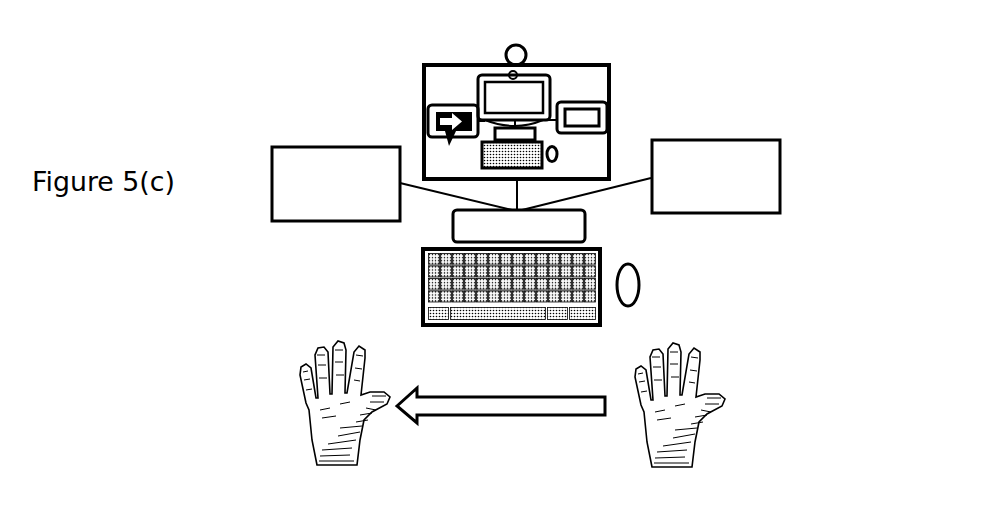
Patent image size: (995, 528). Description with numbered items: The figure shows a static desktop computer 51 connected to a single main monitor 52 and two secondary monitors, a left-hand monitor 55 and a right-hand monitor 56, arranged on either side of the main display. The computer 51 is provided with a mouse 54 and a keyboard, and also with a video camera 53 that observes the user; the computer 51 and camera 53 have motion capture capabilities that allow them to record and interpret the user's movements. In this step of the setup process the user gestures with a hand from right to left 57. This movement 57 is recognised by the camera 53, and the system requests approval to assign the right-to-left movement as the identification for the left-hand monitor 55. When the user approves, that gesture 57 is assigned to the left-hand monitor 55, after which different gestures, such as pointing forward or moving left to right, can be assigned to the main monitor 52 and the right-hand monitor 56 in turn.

The desktop computer 51 is at (453, 228).
The main monitor 52 is at (610, 122).
The video camera 53 is at (506, 50).
The mouse 54 is at (640, 283).
The left-hand monitor 55 is at (333, 222).
The right-hand monitor 56 is at (780, 177).
The hand gesture from right to left 57 is at (417, 423).